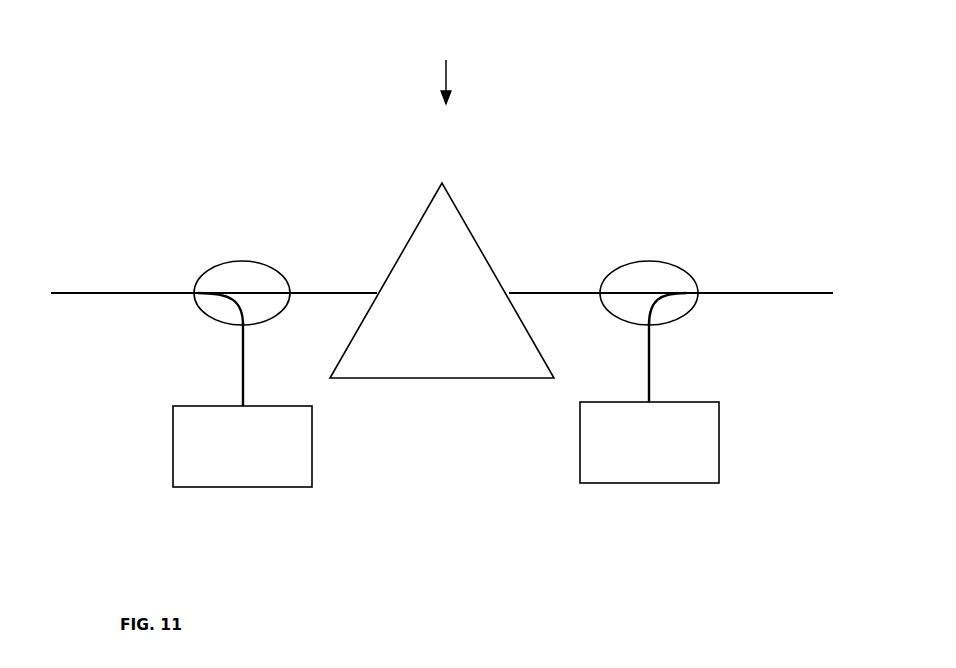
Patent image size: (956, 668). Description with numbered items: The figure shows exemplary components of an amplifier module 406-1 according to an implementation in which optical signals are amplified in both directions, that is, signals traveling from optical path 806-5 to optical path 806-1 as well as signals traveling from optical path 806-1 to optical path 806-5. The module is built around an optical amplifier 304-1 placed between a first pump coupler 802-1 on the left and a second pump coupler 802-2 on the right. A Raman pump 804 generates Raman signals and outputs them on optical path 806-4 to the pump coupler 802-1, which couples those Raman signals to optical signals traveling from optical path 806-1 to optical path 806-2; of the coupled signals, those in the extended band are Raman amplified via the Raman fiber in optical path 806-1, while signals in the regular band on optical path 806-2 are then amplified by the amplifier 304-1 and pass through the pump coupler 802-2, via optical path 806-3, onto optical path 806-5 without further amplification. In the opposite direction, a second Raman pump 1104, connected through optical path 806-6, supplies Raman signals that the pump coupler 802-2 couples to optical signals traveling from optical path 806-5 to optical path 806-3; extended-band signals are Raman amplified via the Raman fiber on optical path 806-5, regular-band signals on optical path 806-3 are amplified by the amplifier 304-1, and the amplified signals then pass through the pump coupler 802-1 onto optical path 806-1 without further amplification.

The amplifier module 406-1 is at (445, 72).
The pump coupler 802-1 is at (242, 262).
The pump coupler 802-2 is at (648, 262).
The amplifier 304-1 is at (442, 280).
The Raman pump 804 is at (242, 446).
The Raman pump 1104 is at (649, 442).
The optical path 806-1 is at (152, 294).
The optical path 806-2 is at (343, 291).
The optical path 806-3 is at (553, 291).
The optical path 806-4 is at (244, 357).
The optical path 806-5 is at (752, 292).
The optical path 806-6 is at (651, 348).